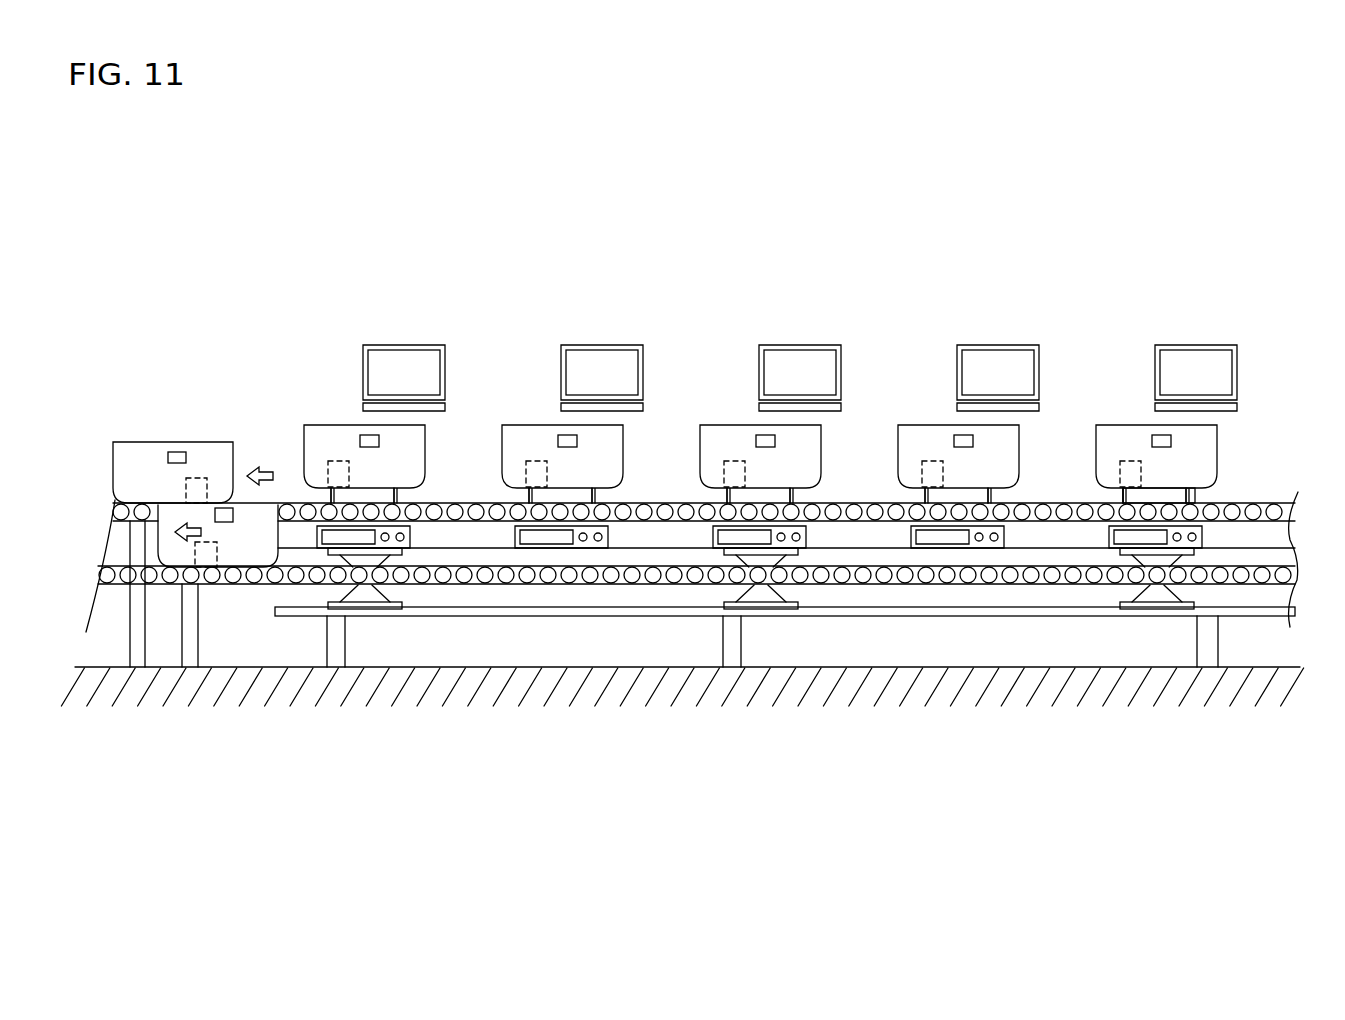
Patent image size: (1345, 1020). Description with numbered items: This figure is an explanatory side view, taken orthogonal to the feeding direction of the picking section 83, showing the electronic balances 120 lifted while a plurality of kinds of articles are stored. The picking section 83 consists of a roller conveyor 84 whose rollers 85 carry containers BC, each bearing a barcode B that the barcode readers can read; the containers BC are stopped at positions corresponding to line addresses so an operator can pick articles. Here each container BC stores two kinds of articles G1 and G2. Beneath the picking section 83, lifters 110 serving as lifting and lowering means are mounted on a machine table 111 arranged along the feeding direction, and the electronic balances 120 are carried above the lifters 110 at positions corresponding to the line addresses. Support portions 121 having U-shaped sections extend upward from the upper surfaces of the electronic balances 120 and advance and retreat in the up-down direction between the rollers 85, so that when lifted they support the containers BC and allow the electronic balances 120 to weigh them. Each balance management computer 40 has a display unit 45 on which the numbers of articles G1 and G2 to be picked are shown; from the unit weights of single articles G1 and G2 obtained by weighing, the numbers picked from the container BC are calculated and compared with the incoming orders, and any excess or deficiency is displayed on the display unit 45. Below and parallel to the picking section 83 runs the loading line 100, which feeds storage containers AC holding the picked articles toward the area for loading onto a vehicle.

The balance management computer 40 is at (797, 314).
The display unit 45 is at (821, 325).
The picking section 83 is at (248, 339).
The roller conveyor 84 is at (1265, 502).
The rollers 85 is at (1188, 508).
The container BC is at (137, 442).
The barcode B is at (167, 452).
The first kind of articles G1 is at (202, 478).
The second kind of articles G2 is at (197, 560).
The loading line 100 is at (167, 587).
The storage container AC is at (227, 547).
The lifter 110 is at (387, 557).
The machine table 111 is at (488, 617).
The electronic balance 120 is at (336, 545).
The support portion 121 is at (1120, 500).